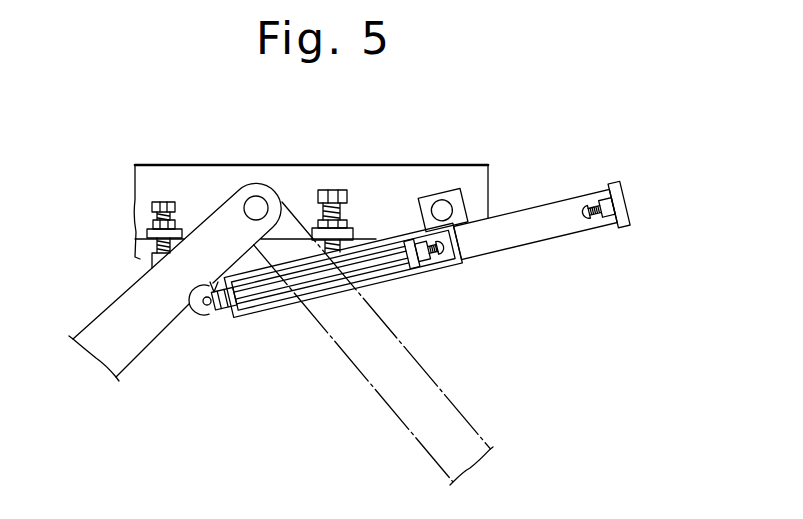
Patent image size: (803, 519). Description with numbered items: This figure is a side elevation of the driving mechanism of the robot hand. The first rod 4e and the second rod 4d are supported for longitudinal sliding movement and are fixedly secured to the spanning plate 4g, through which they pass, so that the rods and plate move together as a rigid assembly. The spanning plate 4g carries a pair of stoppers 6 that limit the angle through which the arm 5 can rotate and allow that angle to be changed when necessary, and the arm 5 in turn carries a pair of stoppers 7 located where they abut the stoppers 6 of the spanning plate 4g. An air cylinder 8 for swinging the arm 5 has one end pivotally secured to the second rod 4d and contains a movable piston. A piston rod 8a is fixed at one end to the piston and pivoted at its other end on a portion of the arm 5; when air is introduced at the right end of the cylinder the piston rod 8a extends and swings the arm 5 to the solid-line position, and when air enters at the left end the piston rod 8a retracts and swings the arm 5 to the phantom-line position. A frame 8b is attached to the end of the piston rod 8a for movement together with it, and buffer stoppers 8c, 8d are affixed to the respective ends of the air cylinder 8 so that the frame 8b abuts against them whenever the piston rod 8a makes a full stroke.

The second rod 4d is at (443, 210).
The first rod 4e is at (258, 197).
The spanning plate 4g is at (412, 173).
The arm 5 is at (122, 310).
The stoppers 6 is at (147, 230).
The stoppers 7 is at (152, 260).
The air cylinder 8 is at (530, 235).
The piston rod 8a is at (267, 292).
The frame 8b is at (293, 305).
The buffer stopper 8c is at (434, 260).
The buffer stopper 8d is at (613, 222).